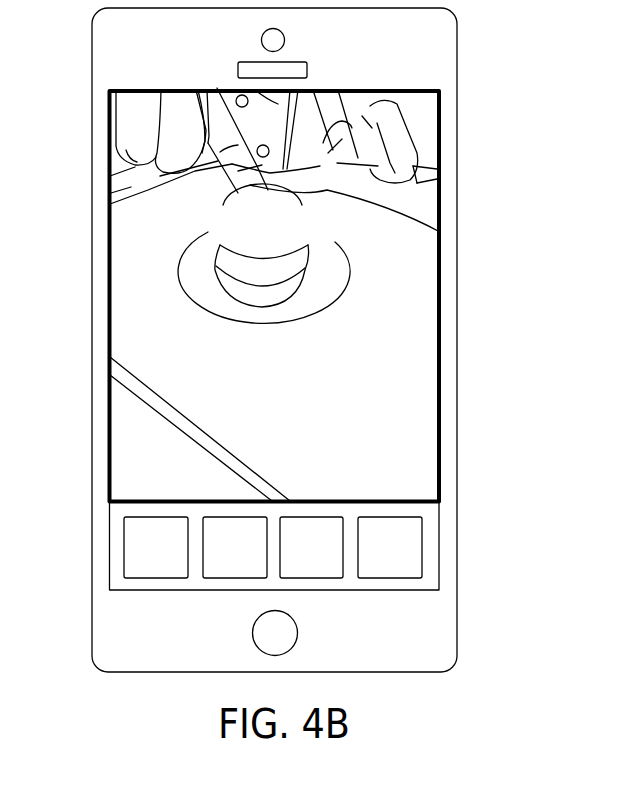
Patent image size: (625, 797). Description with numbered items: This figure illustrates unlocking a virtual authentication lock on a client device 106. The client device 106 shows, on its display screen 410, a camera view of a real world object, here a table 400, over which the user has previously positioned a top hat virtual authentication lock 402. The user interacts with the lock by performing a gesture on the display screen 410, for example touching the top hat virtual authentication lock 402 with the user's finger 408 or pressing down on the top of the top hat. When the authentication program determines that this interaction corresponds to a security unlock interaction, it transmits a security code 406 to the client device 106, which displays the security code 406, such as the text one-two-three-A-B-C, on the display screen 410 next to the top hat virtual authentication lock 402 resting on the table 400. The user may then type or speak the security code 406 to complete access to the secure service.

The client device 106 is at (457, 350).
The table 400 is at (422, 225).
The top hat virtual authentication lock 402 is at (325, 308).
The security code 406 is at (213, 223).
The finger 408 is at (218, 162).
The display screen 410 is at (413, 172).